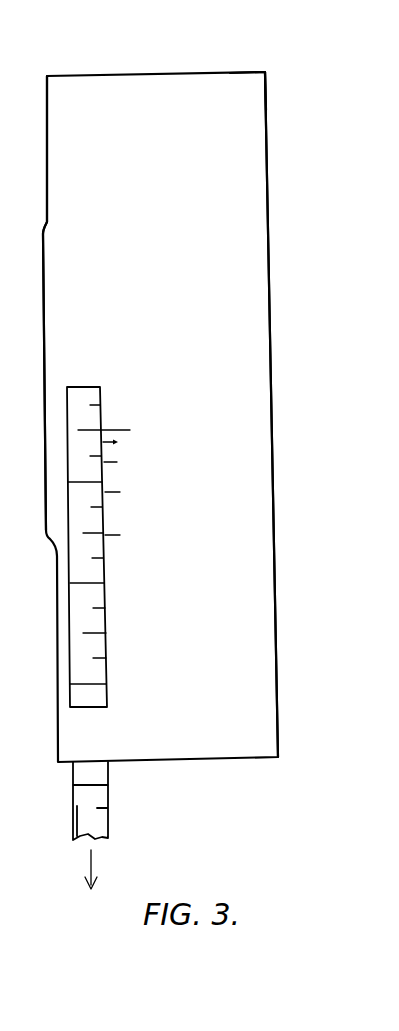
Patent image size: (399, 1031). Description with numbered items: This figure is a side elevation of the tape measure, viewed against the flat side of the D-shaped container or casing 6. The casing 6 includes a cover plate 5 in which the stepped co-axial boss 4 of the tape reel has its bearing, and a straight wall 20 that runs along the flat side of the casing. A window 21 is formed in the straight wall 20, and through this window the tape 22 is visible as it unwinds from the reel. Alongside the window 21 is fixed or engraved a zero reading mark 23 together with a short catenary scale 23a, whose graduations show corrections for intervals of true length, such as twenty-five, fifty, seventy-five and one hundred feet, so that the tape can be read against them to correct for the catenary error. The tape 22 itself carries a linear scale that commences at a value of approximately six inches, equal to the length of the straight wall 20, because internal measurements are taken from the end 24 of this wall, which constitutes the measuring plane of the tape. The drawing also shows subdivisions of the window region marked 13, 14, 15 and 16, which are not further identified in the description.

The stepped co-axial boss 4 is at (3, 578).
The cover plate 5 is at (42, 265).
The D-shaped container or casing 6 is at (272, 157).
The lower tube section 13 is at (90, 777).
The lower scale section 14 is at (88, 677).
The middle scale section 15 is at (87, 576).
The upper scale section 16 is at (85, 476).
The straight wall 20 is at (151, 395).
The window 21 is at (70, 657).
The tape 22 is at (100, 820).
The zero reading mark 23 is at (119, 427).
The catenary scale 23a is at (158, 438).
The end of the wall 24 is at (250, 83).